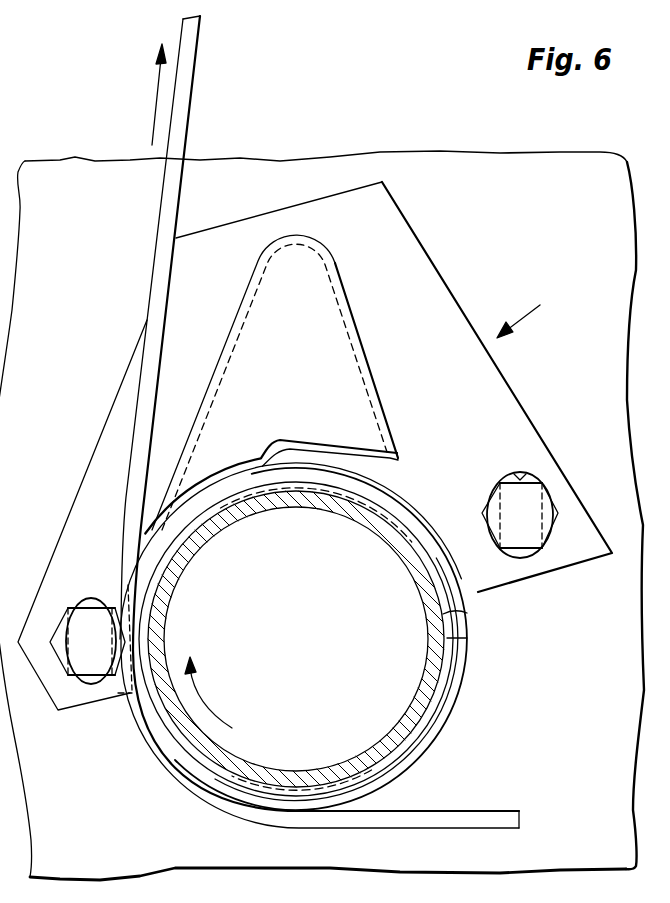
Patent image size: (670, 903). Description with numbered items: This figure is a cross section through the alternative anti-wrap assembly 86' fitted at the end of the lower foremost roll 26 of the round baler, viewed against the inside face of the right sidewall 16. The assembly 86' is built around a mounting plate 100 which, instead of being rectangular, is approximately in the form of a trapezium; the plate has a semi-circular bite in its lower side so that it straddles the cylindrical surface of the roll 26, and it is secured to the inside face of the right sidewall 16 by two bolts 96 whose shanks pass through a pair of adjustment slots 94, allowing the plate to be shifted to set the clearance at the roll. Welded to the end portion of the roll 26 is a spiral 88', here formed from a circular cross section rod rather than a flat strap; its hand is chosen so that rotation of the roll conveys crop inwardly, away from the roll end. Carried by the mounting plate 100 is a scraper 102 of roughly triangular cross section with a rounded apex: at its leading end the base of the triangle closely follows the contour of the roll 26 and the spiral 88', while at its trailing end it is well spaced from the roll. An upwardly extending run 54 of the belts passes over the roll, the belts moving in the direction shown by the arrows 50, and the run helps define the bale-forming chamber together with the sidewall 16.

The right sidewall 16 is at (549, 202).
The lower foremost roll 26 is at (466, 614).
The arrows 50 is at (153, 100).
The upwardly extending run of the belts 54 is at (160, 192).
The anti-wrap assembly 86' is at (534, 316).
The spiral 88' is at (311, 636).
The adjustment slots 94 is at (90, 603).
The bolts 96 is at (87, 663).
The mounting plate 100 is at (432, 309).
The scraper 102 is at (335, 272).